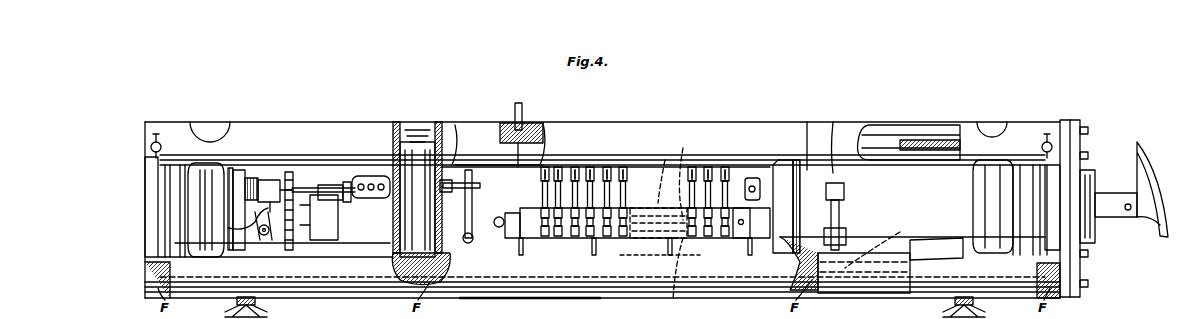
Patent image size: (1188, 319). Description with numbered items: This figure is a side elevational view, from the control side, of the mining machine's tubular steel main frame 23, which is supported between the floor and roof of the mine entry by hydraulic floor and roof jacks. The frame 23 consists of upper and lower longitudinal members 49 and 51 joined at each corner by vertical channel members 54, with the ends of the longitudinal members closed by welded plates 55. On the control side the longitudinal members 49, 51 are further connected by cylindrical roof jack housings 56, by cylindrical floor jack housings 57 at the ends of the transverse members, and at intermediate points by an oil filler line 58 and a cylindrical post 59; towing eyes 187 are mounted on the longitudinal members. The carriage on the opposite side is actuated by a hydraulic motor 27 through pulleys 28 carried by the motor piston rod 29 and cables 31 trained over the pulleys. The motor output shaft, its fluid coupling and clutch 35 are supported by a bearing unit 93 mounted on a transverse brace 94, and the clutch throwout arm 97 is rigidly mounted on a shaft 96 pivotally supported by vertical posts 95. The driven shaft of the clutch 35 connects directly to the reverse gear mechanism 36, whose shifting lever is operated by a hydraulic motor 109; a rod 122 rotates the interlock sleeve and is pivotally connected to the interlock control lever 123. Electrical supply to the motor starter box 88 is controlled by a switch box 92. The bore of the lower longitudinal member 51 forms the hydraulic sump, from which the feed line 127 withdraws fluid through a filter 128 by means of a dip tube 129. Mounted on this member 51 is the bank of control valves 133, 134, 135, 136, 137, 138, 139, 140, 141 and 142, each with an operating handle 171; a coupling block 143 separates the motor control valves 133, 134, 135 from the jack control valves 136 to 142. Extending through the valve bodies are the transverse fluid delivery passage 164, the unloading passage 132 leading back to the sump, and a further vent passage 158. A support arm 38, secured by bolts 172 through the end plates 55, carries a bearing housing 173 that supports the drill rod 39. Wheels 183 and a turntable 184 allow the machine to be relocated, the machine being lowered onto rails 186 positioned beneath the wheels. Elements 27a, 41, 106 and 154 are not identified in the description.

The tubular steel main frame 23 is at (650, 290).
The hydraulic motor 27 is at (512, 103).
The rod guide 27a is at (500, 140).
The pulleys 28 is at (950, 140).
The motor piston rod 29 is at (835, 150).
The cables 31 is at (888, 125).
The clutch 35 is at (296, 248).
The reverse gear mechanism 36 is at (238, 250).
The support arm 38 is at (1072, 125).
The drill rod 39 is at (1112, 200).
The propeller blade 41 is at (1140, 140).
The upper longitudinal members 49 is at (795, 122).
The lower longitudinal members 51 is at (755, 285).
The vertical channel members 54 is at (151, 242).
The plates 55 is at (148, 285).
The cylindrical roof jack housings 56 is at (214, 245).
The cylindrical floor jack housings 57 is at (167, 205).
The oil filler line 58 is at (455, 130).
The cylindrical post 59 is at (775, 165).
The motor starter box 88 is at (948, 245).
The switch box 92 is at (390, 235).
The bearing unit 93 is at (350, 200).
The transverse brace 94 is at (330, 242).
The vertical posts 95 is at (262, 242).
The shaft 96 is at (268, 236).
The clutch throwout arm 97 is at (230, 228).
The motor 106 is at (270, 180).
The hydraulic motor 109 is at (248, 178).
The rod 122 is at (325, 186).
The interlock control lever 123 is at (470, 243).
The feed line 127 is at (845, 220).
The filter 128 is at (865, 285).
The dip tube 129 is at (912, 240).
The unloading passage 132 is at (659, 171).
The control valve 133 is at (738, 240).
The control valve 134 is at (708, 240).
The control valve 135 is at (690, 240).
The control valve 136 is at (626, 240).
The control valve 137 is at (607, 240).
The control valve 138 is at (592, 240).
The control valve 139 is at (560, 240).
The control valve 140 is at (575, 240).
The control valve 141 is at (545, 240).
The control valve 142 is at (523, 242).
The coupling block 143 is at (670, 171).
The conduit 154 is at (684, 276).
The transverse passage 158 is at (606, 202).
The transverse fluid delivery passage 164 is at (658, 212).
The operating handle 171 is at (608, 165).
The bolts 172 is at (1088, 130).
The bearing housing 173 is at (1090, 170).
The wheels 183 is at (258, 310).
The turntable 184 is at (526, 308).
The rails 186 is at (235, 310).
The towing eyes 187 is at (150, 147).